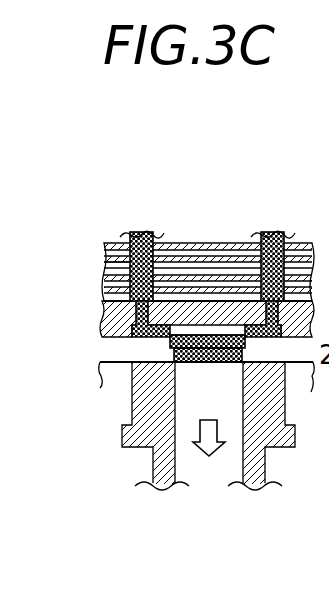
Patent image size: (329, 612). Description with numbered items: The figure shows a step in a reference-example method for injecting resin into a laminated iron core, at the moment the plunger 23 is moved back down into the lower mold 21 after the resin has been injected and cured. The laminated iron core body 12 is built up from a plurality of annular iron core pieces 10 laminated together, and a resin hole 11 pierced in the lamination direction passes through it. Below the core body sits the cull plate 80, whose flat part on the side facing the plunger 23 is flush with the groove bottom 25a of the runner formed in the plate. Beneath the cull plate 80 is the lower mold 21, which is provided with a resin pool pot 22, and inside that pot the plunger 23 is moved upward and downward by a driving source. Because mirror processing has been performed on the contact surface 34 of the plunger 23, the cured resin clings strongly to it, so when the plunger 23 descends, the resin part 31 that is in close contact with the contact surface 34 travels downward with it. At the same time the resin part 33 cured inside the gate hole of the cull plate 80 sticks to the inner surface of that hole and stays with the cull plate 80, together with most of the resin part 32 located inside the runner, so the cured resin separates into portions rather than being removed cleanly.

The annular iron core piece 10 is at (195, 271).
The resin hole 11 is at (141, 231).
The laminated iron core body 12 is at (180, 214).
The lower mold 21 is at (182, 461).
The resin pool pot 22 is at (140, 444).
The plunger 23 is at (209, 477).
The groove bottom 25a is at (172, 341).
The resin part 31 is at (175, 350).
The resin part 32 is at (170, 339).
The resin part 33 is at (118, 268).
The contact surface 34 is at (170, 363).
The cull plate 80 is at (114, 311).